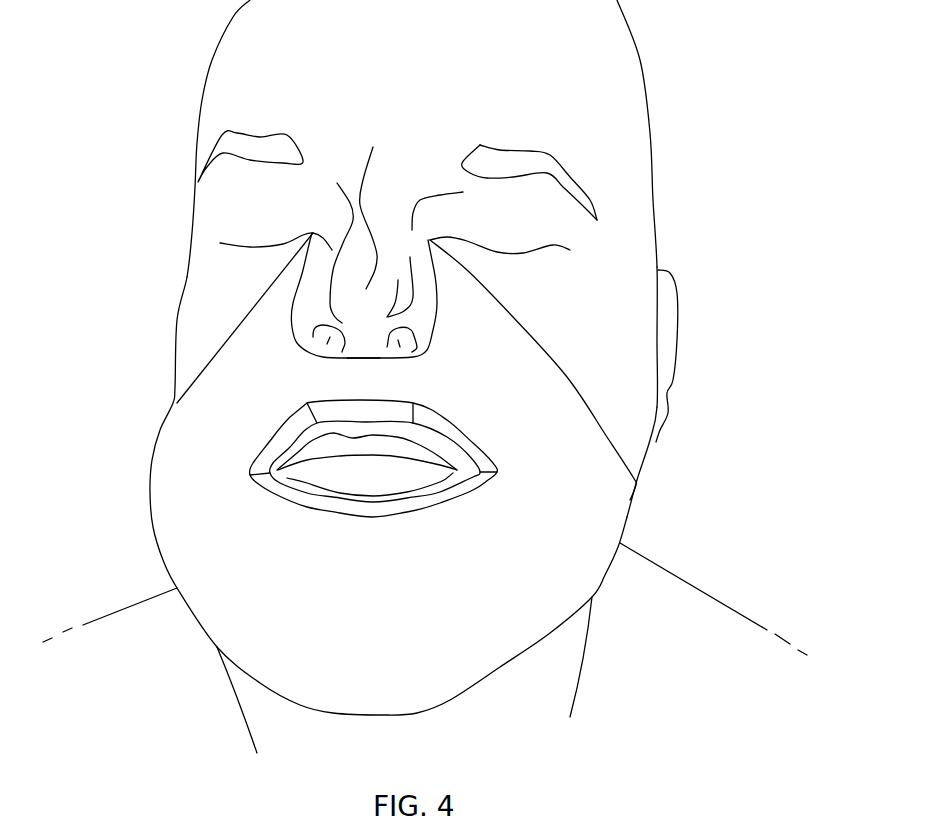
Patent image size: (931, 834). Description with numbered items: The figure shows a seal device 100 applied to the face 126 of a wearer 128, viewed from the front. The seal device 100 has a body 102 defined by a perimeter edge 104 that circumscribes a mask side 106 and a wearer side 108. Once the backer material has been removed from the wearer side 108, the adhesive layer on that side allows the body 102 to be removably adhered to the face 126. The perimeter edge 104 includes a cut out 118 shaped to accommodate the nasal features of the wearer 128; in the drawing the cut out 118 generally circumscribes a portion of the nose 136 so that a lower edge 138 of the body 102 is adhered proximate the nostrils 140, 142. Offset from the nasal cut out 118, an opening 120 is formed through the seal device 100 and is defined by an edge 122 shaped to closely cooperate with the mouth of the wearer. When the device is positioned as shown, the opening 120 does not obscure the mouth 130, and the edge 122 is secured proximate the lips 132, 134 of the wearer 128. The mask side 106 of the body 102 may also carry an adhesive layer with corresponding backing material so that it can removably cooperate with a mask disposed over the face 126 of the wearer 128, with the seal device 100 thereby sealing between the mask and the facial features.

The seal device 100 is at (148, 386).
The body 102 is at (253, 406).
The perimeter edge 104 is at (607, 437).
The mask side 106 is at (600, 513).
The wearer side 108 is at (585, 362).
The cut out 118 is at (302, 278).
The opening 120 is at (461, 433).
The edge 122 is at (470, 490).
The face 126 is at (613, 308).
The wearer 128 is at (600, 85).
The mouth 130 is at (369, 459).
The lip 132 is at (320, 473).
The lip 134 is at (317, 439).
The nose 136 is at (377, 239).
The lower edge 138 is at (390, 350).
The nostril 140 is at (344, 346).
The nostril 142 is at (398, 343).